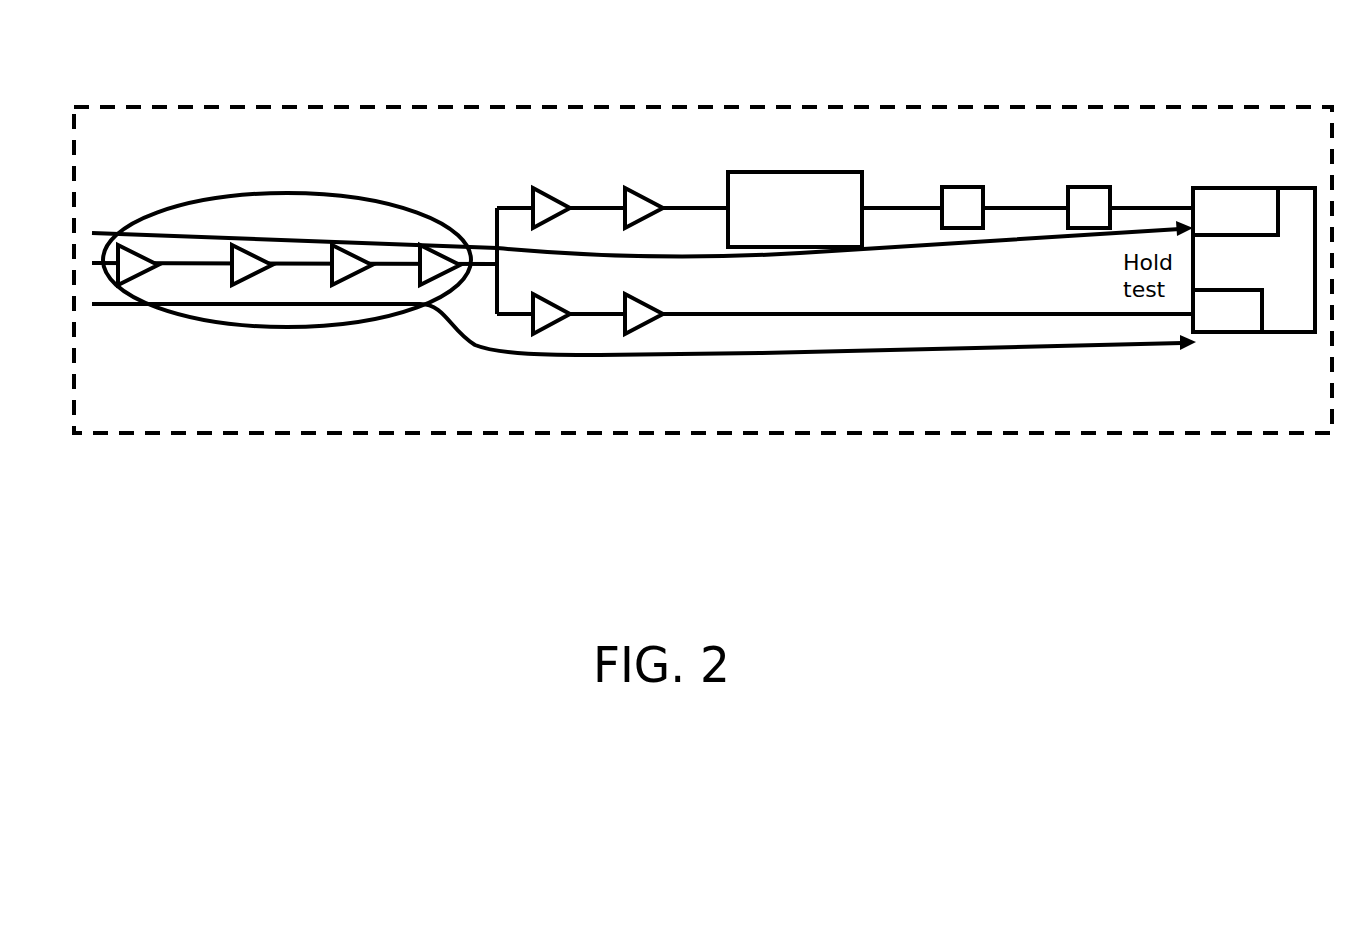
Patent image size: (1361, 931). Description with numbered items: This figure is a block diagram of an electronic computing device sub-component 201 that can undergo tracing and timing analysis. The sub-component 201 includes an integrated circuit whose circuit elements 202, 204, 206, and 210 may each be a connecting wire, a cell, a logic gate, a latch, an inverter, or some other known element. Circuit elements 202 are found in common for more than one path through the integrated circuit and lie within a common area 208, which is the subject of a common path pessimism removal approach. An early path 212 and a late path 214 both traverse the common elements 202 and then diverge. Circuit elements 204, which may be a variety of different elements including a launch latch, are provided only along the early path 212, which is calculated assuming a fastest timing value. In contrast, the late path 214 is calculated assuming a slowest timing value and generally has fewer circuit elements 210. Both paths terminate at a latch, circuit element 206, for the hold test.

The electronic computing device sub-component 201 is at (930, 452).
The common circuit elements 202 is at (252, 250).
The circuit elements along the early path 204 is at (1090, 187).
The circuit element 206 is at (1255, 187).
The common area 208 is at (287, 328).
The circuit elements along the late path 210 is at (553, 334).
The early path 212 is at (707, 257).
The late path 214 is at (760, 353).